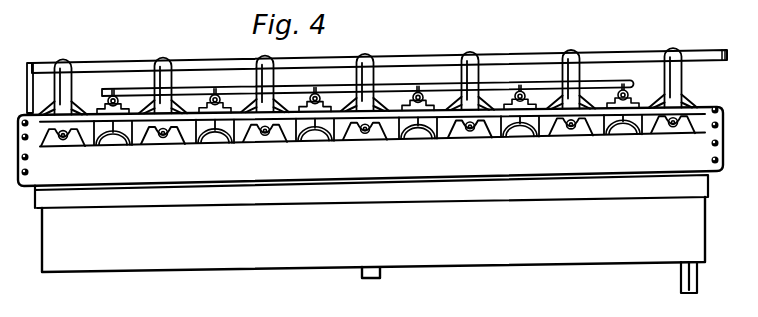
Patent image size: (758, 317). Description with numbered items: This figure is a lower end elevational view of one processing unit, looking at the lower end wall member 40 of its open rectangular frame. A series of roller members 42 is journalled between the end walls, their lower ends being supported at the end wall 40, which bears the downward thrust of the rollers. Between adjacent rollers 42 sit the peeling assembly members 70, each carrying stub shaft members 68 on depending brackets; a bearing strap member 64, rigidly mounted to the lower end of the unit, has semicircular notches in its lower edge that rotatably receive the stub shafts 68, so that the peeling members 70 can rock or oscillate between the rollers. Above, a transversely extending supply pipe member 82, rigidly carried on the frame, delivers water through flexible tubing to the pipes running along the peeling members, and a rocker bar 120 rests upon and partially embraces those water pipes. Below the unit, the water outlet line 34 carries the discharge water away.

The supply pipe member 82 is at (121, 70).
The rocker bar 120 is at (398, 88).
The peeling assembly member 70 is at (300, 126).
The roller member 42 is at (112, 137).
The stub shaft member 68 is at (268, 133).
The bearing strap member 64 is at (438, 112).
The lower end wall member 40 is at (165, 168).
The water outlet line 34 is at (380, 273).